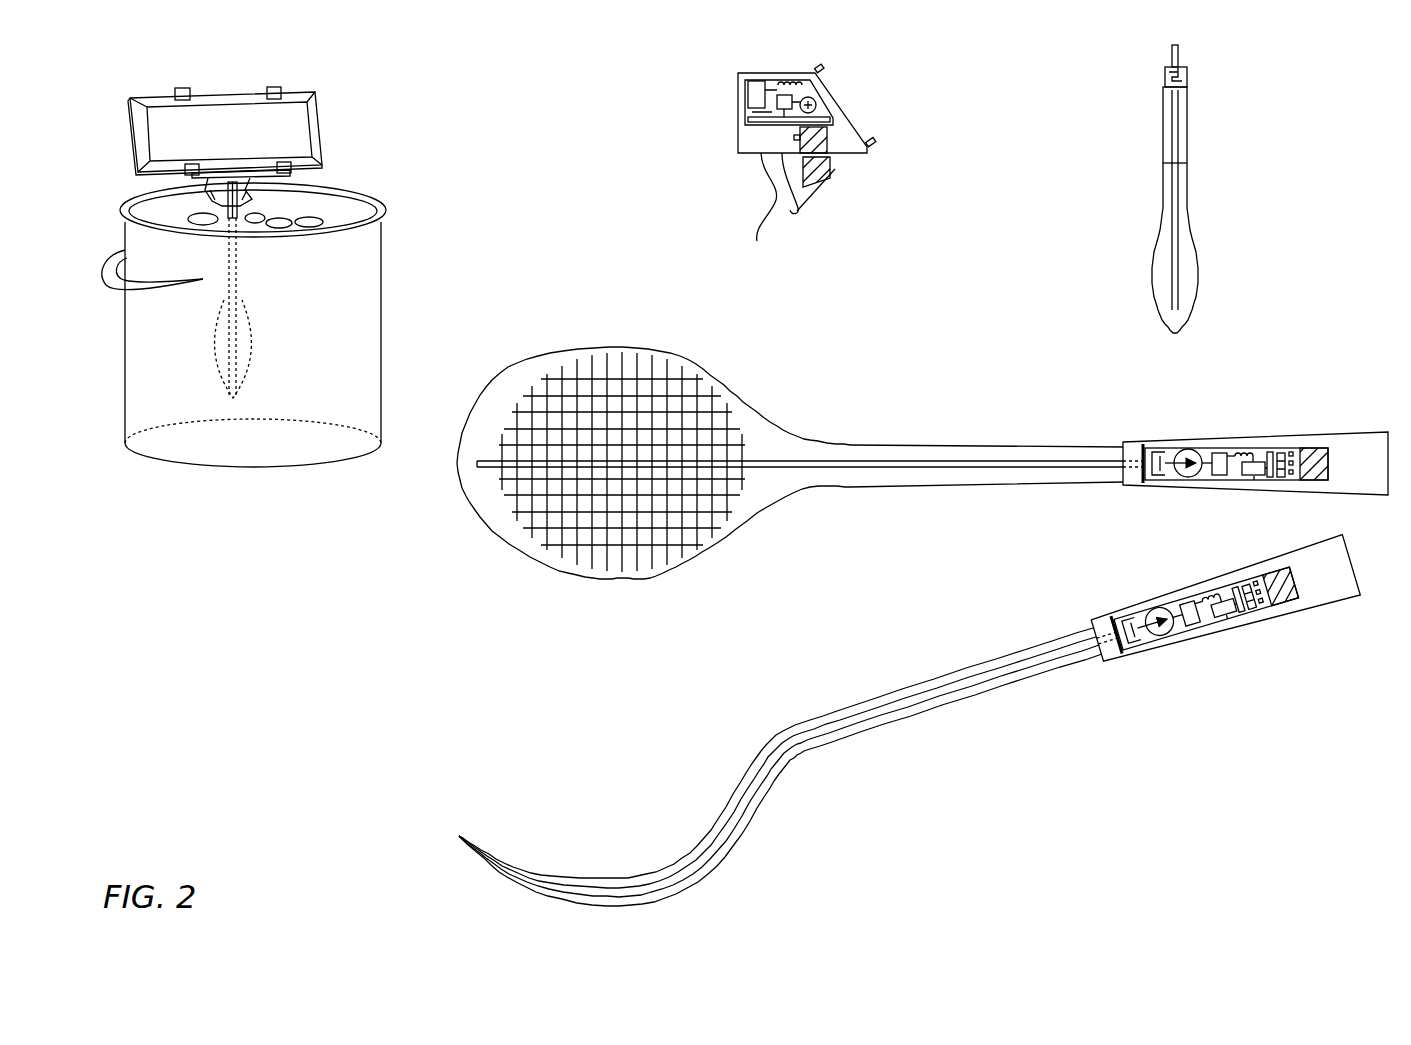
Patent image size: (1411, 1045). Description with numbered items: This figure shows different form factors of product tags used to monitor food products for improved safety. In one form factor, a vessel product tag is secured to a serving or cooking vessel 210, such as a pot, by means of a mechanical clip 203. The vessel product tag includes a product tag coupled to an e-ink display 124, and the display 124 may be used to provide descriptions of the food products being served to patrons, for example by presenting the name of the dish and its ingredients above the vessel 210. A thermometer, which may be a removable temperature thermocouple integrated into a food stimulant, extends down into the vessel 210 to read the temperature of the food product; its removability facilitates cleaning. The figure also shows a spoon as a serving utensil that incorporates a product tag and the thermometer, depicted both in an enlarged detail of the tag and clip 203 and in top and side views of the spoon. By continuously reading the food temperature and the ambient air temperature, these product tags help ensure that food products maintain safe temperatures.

The e-ink display 124 is at (160, 113).
The mechanical clip 203 is at (826, 184).
The serving vessel 210 is at (246, 470).